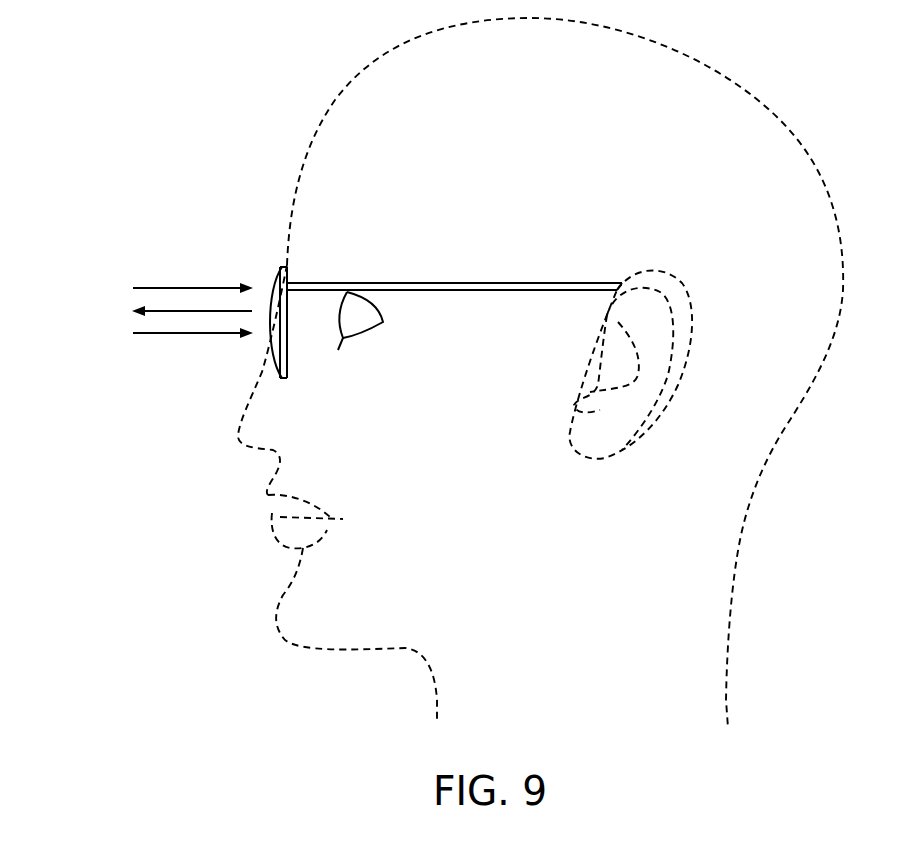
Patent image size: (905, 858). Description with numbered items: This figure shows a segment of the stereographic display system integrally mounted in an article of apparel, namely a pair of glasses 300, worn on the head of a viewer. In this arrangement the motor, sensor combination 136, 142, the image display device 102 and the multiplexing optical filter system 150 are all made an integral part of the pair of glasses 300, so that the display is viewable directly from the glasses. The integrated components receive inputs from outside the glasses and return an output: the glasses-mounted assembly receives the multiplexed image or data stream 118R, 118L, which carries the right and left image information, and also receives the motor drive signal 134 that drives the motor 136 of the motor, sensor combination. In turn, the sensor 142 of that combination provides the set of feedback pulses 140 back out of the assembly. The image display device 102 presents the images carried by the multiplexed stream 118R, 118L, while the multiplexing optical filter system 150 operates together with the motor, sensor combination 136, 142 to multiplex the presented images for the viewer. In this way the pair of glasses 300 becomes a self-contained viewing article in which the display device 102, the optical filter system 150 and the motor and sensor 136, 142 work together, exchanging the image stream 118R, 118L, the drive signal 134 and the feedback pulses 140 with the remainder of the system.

The pair of glasses 300 is at (243, 188).
The motor drive signal 134 is at (163, 287).
The set of feedback pulses 140 is at (163, 310).
The multiplexed image or data stream (right) 118R is at (150, 333).
The multiplexed image or data stream (left) 118L is at (151, 349).
The motor 136 is at (272, 342).
The sensor 142 is at (207, 352).
The image display device 102 is at (375, 377).
The multiplexing optical filter system 150 is at (208, 385).